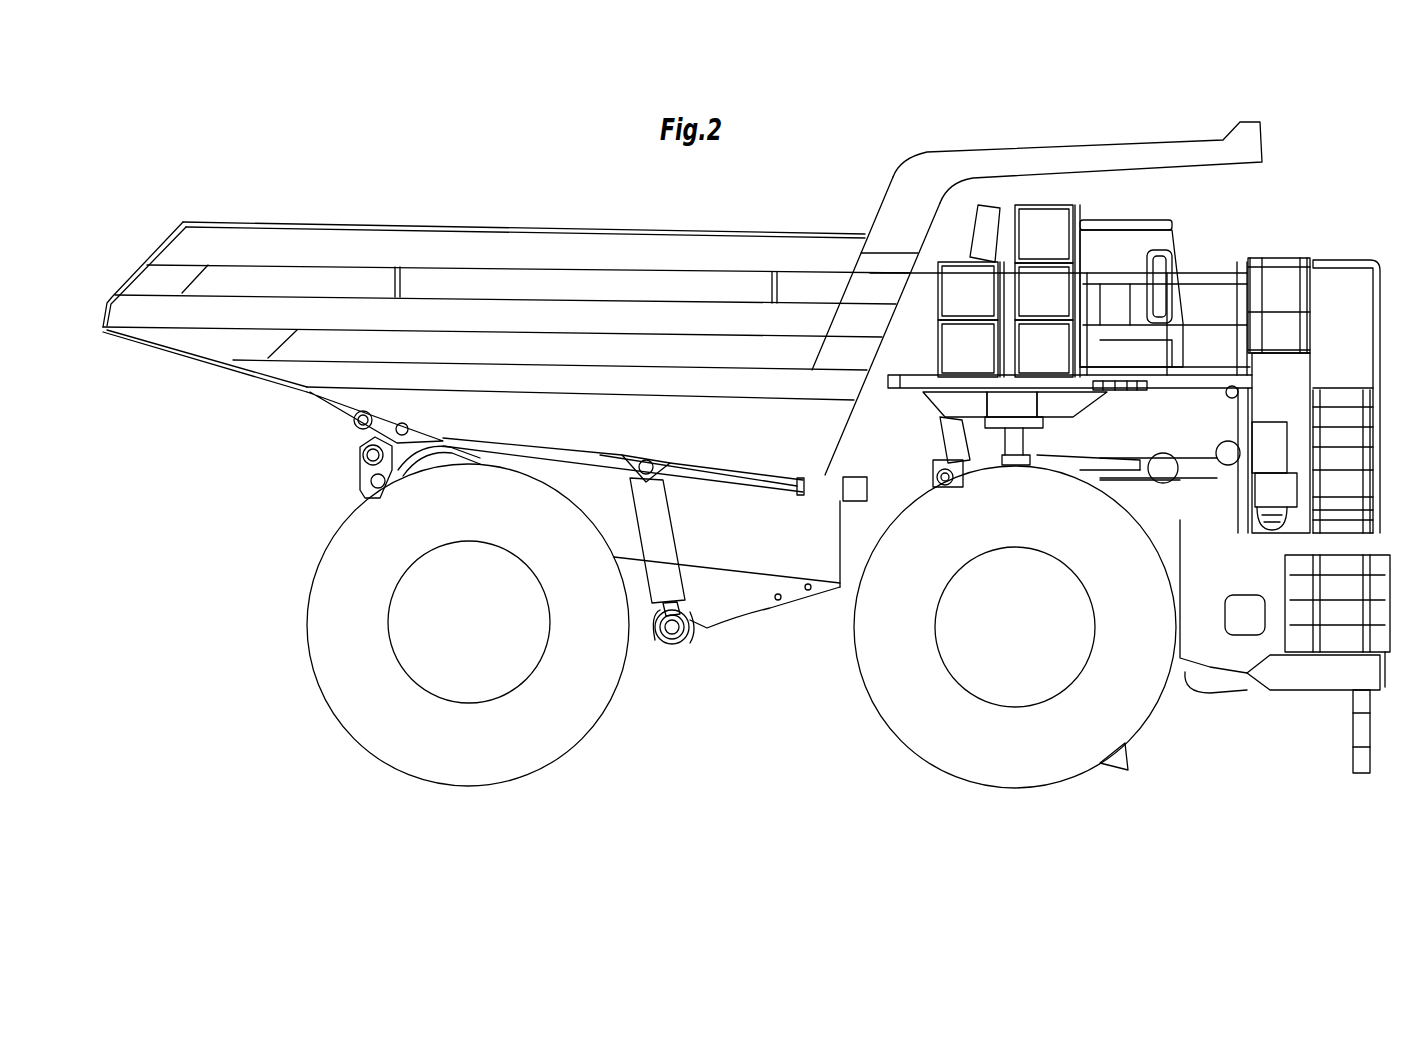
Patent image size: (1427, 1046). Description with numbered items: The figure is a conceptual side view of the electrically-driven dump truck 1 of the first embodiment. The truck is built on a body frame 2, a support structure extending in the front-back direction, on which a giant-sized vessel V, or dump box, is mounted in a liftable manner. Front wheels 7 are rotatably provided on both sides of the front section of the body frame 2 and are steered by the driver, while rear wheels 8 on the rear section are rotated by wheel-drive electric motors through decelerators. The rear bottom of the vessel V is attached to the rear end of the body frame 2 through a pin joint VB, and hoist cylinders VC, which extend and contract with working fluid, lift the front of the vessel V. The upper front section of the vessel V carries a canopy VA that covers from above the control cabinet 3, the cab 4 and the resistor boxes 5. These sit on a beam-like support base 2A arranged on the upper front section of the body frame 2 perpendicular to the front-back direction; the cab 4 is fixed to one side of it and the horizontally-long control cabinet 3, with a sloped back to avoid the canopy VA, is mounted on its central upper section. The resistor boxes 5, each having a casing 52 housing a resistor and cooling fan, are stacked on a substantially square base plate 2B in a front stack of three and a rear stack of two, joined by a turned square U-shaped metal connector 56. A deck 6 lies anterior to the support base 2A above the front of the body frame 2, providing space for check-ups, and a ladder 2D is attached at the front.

The electrically-driven dump truck 1 is at (732, 746).
The body frame 2 is at (700, 624).
The support base 2A is at (1032, 402).
The base plate 2B is at (898, 386).
The ladder 2D is at (1375, 466).
The control cabinet 3 is at (1020, 200).
The cab 4 is at (1130, 226).
The resistor box 5 is at (932, 390).
The deck 6 is at (1205, 395).
The front wheel 7 is at (865, 698).
The rear wheel 8 is at (320, 690).
The casing 52 is at (1055, 215).
The metal connector 56 is at (1000, 258).
The vessel V is at (416, 221).
The canopy VA is at (1140, 150).
The pin joint VB is at (355, 428).
The hoist cylinder VC is at (657, 592).